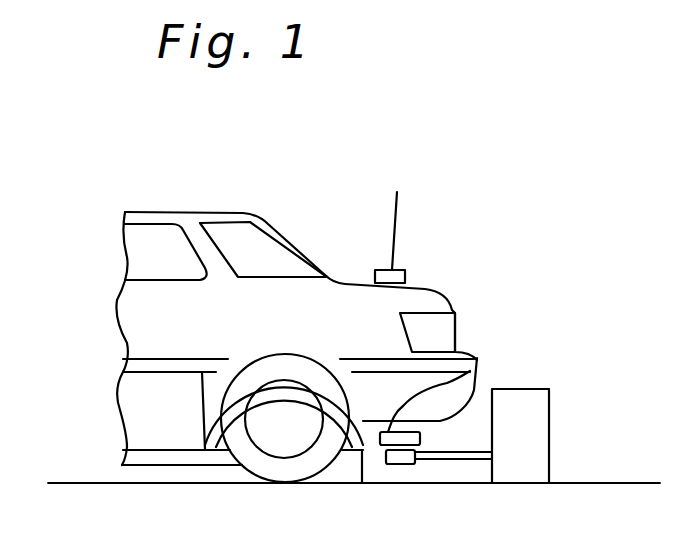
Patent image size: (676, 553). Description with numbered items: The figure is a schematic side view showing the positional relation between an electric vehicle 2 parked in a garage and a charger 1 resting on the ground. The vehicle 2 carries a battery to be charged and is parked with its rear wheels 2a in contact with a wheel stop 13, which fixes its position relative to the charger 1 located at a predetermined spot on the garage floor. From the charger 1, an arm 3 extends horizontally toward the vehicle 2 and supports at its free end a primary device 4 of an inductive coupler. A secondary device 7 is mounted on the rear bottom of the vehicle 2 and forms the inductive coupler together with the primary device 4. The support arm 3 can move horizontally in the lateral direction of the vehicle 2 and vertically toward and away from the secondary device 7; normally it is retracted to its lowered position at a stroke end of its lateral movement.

The charger 1 is at (540, 368).
The electric vehicle 2 is at (313, 309).
The rear wheels 2a is at (250, 468).
The arm 3 is at (450, 460).
The primary device 4 is at (398, 464).
The secondary device 7 is at (472, 357).
The wheel stop 13 is at (318, 478).